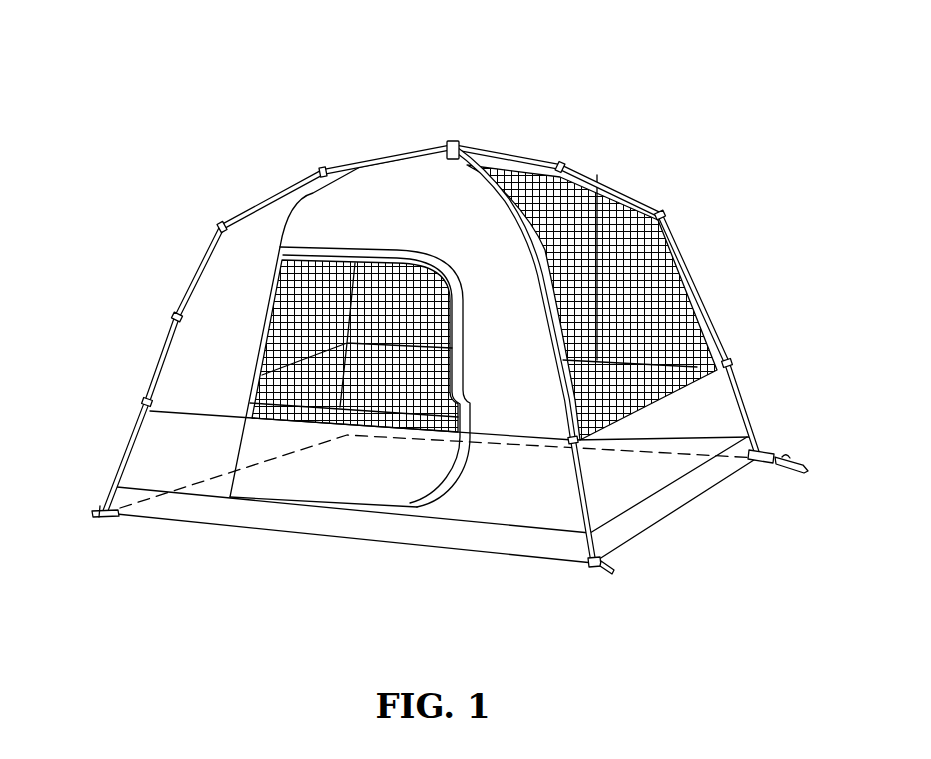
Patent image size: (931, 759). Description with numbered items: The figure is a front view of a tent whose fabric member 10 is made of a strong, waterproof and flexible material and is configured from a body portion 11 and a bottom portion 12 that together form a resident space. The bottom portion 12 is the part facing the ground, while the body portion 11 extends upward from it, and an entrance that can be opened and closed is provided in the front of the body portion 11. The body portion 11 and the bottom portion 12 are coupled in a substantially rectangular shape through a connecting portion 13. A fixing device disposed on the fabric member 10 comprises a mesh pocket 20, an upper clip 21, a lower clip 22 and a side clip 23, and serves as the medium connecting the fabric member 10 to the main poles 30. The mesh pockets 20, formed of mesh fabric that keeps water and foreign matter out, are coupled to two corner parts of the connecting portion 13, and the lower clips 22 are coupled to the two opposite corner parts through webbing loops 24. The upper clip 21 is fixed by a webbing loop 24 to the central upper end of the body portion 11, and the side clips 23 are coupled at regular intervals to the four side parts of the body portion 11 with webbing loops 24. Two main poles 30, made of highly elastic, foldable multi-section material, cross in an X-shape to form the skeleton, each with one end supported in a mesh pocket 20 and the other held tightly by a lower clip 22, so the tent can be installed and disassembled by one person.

The fabric member 10 is at (436, 363).
The body portion 11 is at (157, 445).
The bottom portion 12 is at (360, 550).
The connecting portion 13 is at (212, 527).
The mesh pocket 20 is at (108, 497).
The upper clip 21 is at (453, 141).
The lower clip 22 is at (777, 460).
The side clip 23 is at (740, 360).
The webbing loop 24 is at (440, 147).
The main pole 30 is at (255, 200).